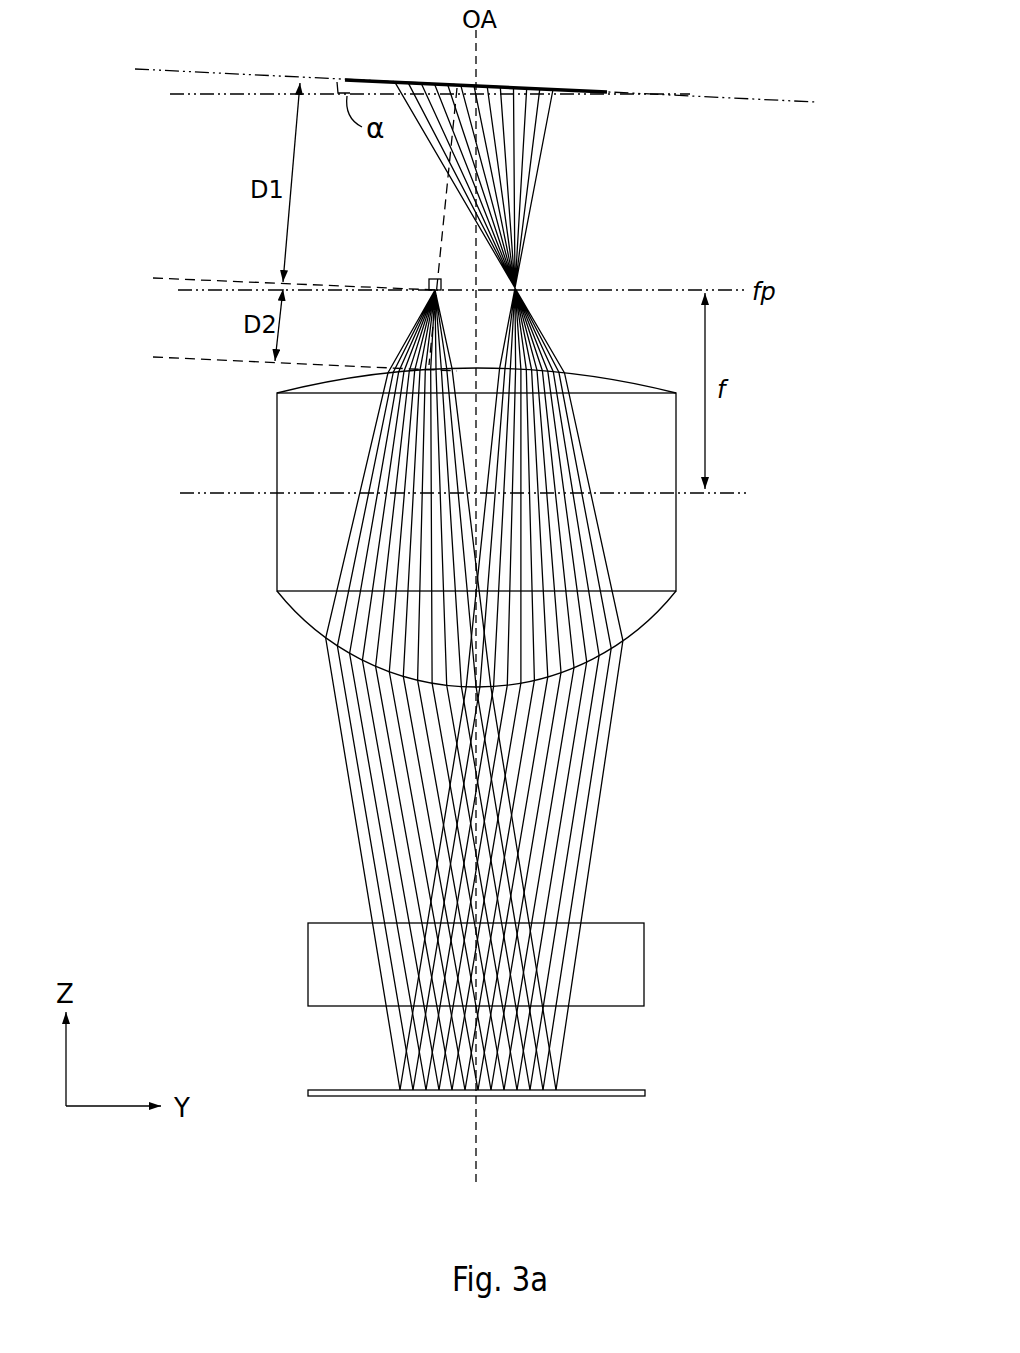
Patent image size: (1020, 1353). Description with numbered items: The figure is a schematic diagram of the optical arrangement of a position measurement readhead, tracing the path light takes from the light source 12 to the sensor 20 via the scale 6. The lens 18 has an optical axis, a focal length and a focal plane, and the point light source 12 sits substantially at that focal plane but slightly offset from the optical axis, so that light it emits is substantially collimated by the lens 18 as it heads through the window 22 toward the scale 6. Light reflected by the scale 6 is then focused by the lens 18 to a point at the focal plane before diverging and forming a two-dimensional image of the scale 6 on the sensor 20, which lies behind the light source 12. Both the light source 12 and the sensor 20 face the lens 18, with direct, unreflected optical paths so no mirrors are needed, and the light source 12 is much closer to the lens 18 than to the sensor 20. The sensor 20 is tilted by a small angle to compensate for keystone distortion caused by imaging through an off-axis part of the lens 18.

The sensor 20 is at (585, 82).
The light source 12 is at (428, 280).
The lens 18 is at (684, 520).
The window 22 is at (310, 905).
The scale 6 is at (623, 1100).